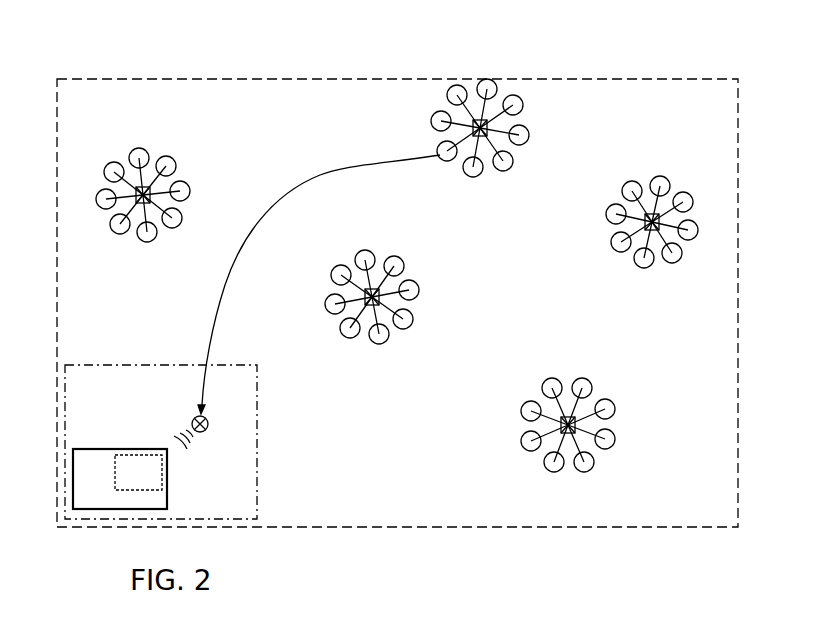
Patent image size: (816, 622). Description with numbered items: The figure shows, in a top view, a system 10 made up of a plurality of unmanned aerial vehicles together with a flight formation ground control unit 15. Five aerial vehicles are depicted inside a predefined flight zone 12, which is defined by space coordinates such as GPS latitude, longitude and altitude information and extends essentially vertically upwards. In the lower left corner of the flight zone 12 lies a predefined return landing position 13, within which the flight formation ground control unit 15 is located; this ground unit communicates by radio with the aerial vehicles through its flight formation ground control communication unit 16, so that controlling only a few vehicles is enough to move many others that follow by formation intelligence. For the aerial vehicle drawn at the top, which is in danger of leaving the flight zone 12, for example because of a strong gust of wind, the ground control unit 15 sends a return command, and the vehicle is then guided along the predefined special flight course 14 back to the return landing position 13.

The system 10 is at (594, 31).
The flight zone 12 is at (97, 115).
The return landing position 13 is at (108, 408).
The special flight course 14 is at (283, 195).
The flight formation ground control unit 15 is at (110, 505).
The flight formation ground control communication unit 16 is at (158, 487).